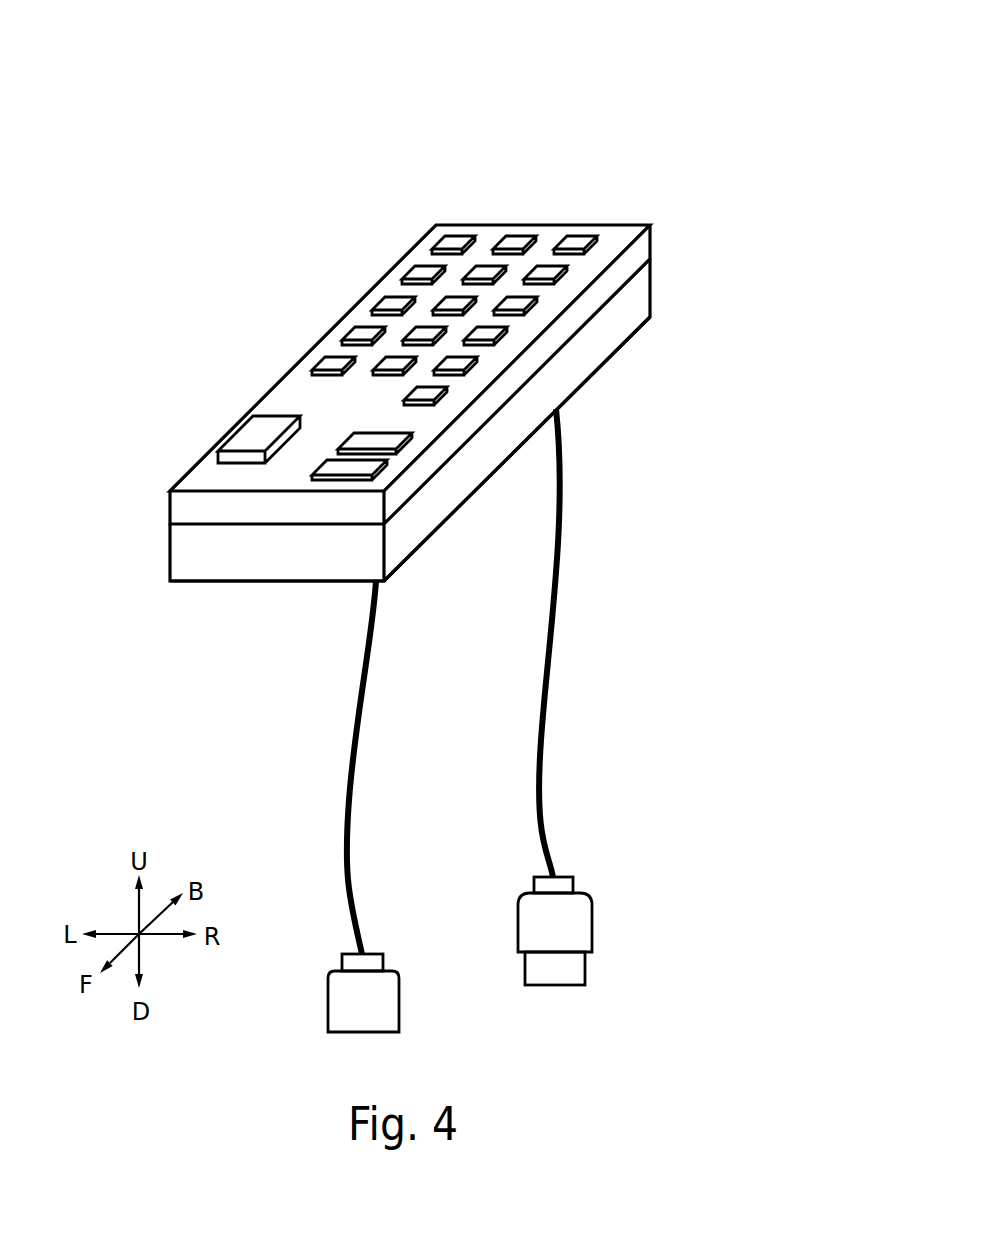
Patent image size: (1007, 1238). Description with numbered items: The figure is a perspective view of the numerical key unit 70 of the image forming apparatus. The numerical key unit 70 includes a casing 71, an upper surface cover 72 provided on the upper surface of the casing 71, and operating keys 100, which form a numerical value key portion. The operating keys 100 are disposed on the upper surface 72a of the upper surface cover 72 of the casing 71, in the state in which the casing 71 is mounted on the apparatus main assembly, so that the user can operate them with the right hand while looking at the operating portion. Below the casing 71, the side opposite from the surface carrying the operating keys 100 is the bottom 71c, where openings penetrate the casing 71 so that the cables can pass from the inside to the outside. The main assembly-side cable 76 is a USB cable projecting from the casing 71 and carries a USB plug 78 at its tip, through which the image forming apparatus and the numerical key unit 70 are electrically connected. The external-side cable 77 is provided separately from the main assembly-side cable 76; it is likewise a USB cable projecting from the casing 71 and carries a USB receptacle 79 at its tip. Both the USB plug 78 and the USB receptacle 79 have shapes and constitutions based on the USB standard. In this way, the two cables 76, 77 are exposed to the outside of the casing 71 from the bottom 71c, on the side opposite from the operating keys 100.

The numerical key unit 70 is at (560, 94).
The casing 71 is at (647, 293).
The bottom 71c is at (265, 598).
The upper surface cover 72 is at (647, 247).
The upper surface 72a is at (298, 385).
The main assembly-side cable 76 is at (562, 622).
The external-side cable 77 is at (357, 767).
The USB plug 78 is at (588, 932).
The USB receptacle 79 is at (389, 1006).
The operating keys 100 is at (300, 315).